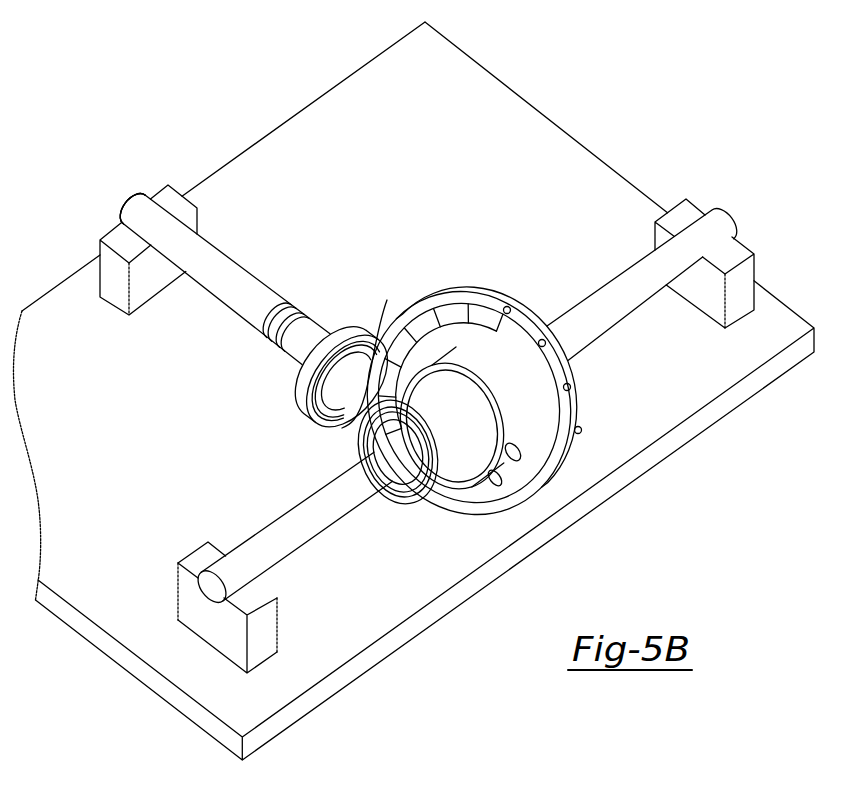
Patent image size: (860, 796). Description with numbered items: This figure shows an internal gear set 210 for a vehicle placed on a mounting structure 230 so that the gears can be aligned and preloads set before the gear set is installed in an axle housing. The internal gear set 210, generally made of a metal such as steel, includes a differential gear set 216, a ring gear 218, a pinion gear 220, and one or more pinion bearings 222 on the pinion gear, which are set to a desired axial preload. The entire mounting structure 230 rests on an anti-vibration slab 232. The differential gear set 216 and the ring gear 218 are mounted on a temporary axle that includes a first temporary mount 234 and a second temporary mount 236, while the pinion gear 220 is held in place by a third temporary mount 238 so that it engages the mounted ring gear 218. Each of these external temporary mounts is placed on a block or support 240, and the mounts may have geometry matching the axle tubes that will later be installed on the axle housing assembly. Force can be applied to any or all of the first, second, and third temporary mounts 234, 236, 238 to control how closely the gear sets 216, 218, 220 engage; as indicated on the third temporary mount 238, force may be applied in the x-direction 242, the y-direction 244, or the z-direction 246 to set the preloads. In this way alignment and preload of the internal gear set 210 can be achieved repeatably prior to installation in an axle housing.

The internal gear set 210 is at (506, 383).
The differential gear set 216 is at (496, 466).
The ring gear 218 is at (572, 448).
The pinion gear 220 is at (416, 361).
The pinion bearings 222 is at (348, 352).
The mounting structure 230 is at (413, 391).
The anti-vibration slab 232 is at (687, 427).
The first temporary mount 234 is at (270, 543).
The second temporary mount 236 is at (620, 290).
The third temporary mount 238 is at (171, 219).
The block or support 240 is at (172, 203).
The x-direction 242 is at (114, 216).
The y-direction 244 is at (122, 196).
The z-direction 246 is at (140, 189).